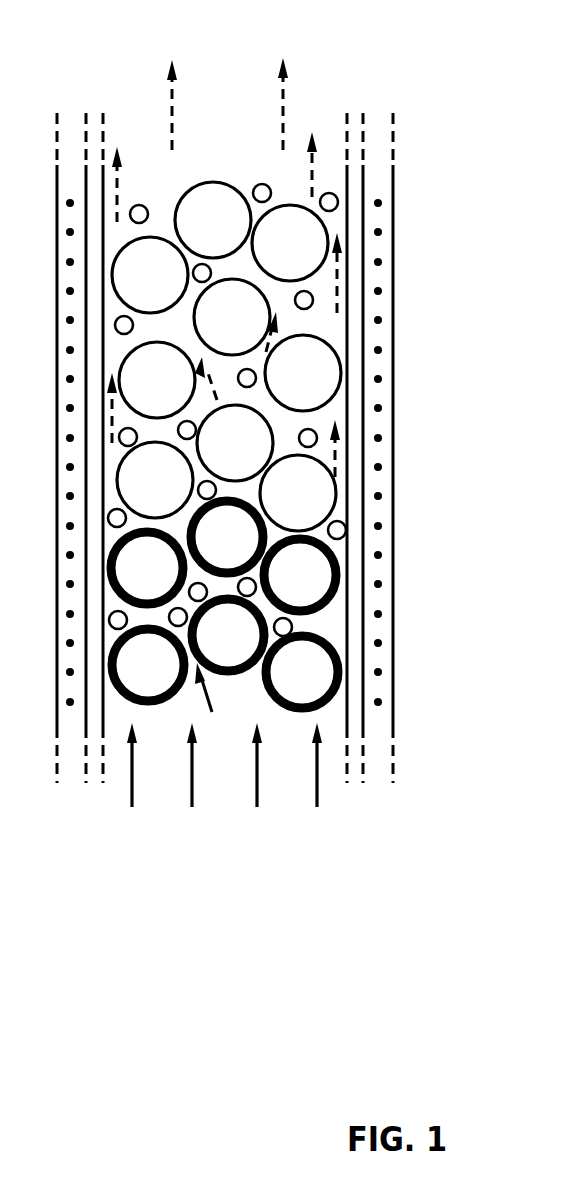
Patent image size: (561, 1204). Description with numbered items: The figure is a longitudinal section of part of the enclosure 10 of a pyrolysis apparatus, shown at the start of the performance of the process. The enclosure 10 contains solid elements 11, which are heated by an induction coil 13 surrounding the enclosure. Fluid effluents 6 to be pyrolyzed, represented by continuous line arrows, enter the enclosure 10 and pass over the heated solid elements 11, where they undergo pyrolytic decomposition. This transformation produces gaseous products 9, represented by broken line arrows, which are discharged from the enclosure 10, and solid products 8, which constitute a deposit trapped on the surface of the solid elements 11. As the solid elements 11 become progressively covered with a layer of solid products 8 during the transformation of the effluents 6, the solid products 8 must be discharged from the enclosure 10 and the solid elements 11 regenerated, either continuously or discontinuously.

The fluid effluents 6 is at (194, 767).
The solid products formed 8 is at (283, 710).
The gaseous products formed 9 is at (285, 107).
The enclosure 10 is at (346, 207).
The solid elements 11 is at (298, 373).
The induction coil 13 is at (393, 460).